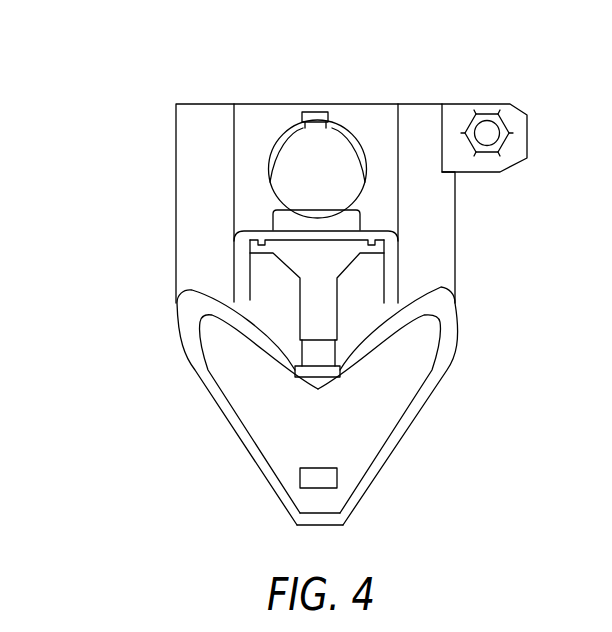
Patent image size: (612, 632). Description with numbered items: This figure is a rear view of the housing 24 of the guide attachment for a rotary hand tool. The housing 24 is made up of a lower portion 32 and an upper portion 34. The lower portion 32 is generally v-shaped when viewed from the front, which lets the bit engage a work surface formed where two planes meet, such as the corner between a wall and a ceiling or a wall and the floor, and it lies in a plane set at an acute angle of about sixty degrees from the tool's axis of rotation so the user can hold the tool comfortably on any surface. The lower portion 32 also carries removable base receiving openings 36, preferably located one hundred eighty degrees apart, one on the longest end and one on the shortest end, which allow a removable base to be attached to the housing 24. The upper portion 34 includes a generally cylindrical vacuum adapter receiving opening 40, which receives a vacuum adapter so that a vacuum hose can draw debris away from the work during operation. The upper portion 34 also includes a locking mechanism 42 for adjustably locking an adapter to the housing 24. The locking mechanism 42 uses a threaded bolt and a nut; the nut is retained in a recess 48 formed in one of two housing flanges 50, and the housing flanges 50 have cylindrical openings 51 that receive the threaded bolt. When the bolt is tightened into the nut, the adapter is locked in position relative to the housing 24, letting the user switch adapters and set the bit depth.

The housing 24 is at (125, 198).
The lower portion 32 is at (330, 500).
The upper portion 34 is at (197, 140).
The removable base receiving openings 36 is at (307, 321).
The vacuum adapter receiving opening 40 is at (337, 164).
The locking mechanism 42 is at (481, 98).
The recess 48 is at (496, 116).
The housing flanges 50 is at (467, 165).
The cylindrical openings 51 is at (498, 143).